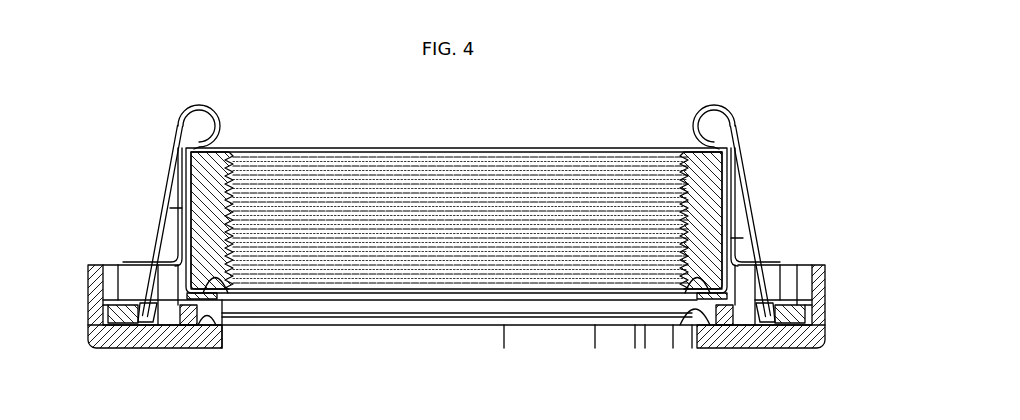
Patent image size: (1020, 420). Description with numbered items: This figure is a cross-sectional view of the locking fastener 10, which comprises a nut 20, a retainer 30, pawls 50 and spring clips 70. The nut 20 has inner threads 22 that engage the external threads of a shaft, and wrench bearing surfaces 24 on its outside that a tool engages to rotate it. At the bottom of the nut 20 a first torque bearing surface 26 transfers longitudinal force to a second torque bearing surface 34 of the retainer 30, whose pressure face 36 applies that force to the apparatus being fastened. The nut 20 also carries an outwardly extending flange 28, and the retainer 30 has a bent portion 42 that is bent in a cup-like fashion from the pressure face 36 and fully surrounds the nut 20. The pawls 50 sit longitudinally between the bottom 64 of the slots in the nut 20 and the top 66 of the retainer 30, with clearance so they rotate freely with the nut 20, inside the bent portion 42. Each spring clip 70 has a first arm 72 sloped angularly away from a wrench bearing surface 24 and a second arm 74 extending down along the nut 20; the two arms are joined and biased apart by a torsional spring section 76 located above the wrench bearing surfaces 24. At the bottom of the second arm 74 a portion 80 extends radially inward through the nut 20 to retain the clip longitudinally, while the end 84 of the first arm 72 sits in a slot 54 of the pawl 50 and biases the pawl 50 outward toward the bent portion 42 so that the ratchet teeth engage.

The locking fastener 10 is at (320, 82).
The nut 20 is at (405, 148).
The inner threads 22 is at (475, 200).
The wrench bearing surfaces 24 is at (172, 178).
The first torque bearing surface 26 is at (208, 318).
The first longitudinal retaining member 28 is at (127, 266).
The retainer 30 is at (815, 265).
The second torque bearing surface 34 is at (200, 316).
The pressure face 36 is at (757, 348).
The bent portion 42 is at (88, 292).
The pawl 50 is at (126, 326).
The slot 54 is at (146, 322).
The bottom of the slots 64 is at (146, 284).
The top of the retainer 66 is at (167, 326).
The spring clip 70 is at (177, 122).
The first arm 72 is at (164, 168).
The second arm 74 is at (170, 208).
The torsional spring section 76 is at (199, 104).
The portion of the second arm 80 is at (233, 268).
The end of the first arm 84 is at (110, 310).